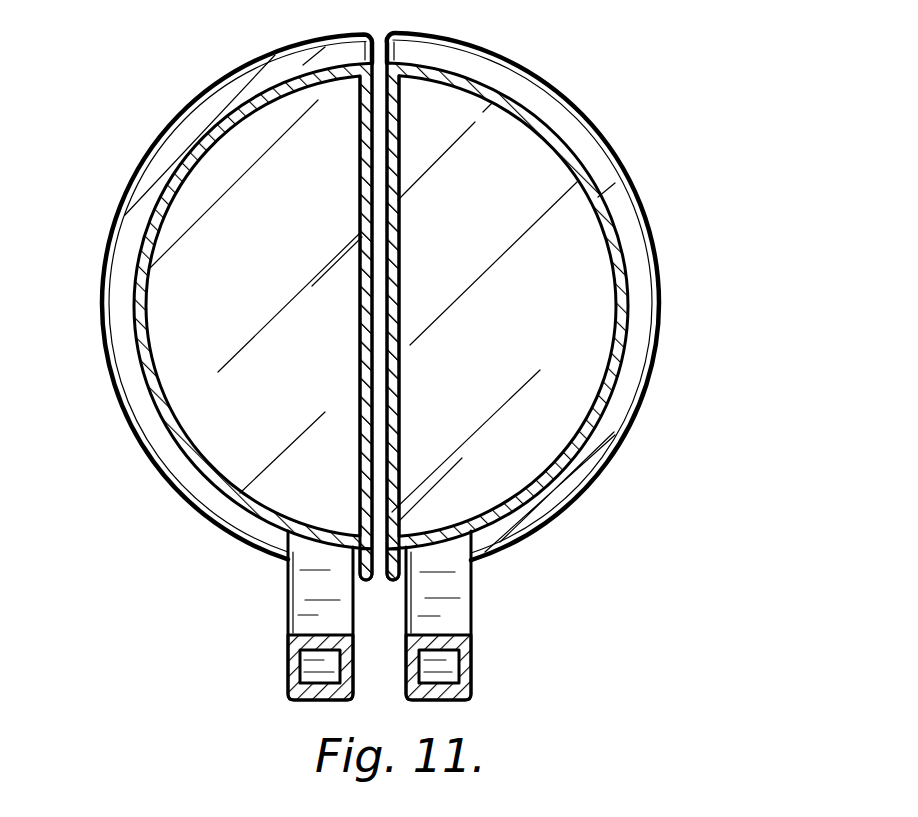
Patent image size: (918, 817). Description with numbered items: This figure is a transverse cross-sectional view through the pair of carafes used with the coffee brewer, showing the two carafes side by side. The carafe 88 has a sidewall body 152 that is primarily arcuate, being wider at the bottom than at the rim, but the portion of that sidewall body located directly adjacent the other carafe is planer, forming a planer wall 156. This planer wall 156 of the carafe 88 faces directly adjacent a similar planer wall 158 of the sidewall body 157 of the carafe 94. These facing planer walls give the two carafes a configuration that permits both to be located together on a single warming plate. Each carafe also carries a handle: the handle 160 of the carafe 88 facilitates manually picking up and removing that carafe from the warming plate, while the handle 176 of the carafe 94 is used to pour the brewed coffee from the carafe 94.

The carafe 88 is at (596, 132).
The carafe 94 is at (194, 103).
The sidewall body 152 is at (655, 366).
The planer wall 156 is at (388, 462).
The sidewall body 157 is at (122, 346).
The planer wall 158 is at (378, 433).
The handle 160 is at (471, 655).
The handle 176 is at (288, 663).